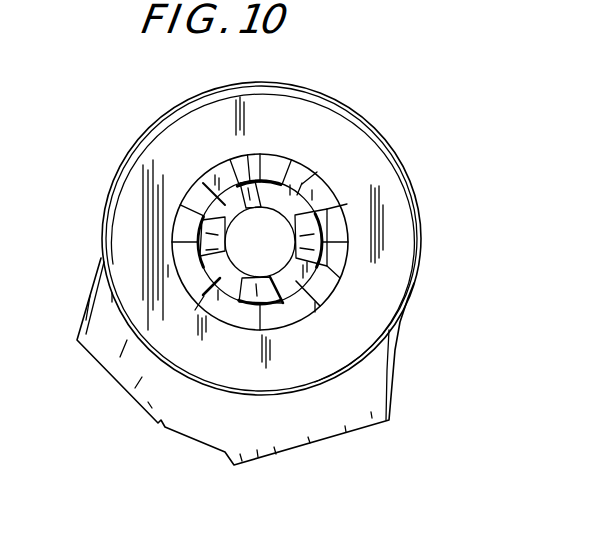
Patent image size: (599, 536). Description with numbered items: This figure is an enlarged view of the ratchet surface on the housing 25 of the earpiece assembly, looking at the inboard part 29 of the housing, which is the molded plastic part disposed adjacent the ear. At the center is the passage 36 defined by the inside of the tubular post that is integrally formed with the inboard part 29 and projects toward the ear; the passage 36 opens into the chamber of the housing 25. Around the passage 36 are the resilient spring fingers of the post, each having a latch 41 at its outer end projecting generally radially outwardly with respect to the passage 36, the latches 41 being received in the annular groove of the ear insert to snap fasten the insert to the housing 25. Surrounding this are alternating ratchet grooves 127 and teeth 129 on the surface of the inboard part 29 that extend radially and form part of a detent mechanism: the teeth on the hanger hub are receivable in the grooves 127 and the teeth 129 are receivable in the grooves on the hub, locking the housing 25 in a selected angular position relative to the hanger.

The housing 25 is at (366, 104).
The first inboard part 29 is at (382, 198).
The passage 36 is at (255, 247).
The latch 41 is at (280, 192).
The ratchet grooves 127 is at (205, 200).
The ratchet teeth 129 is at (212, 178).